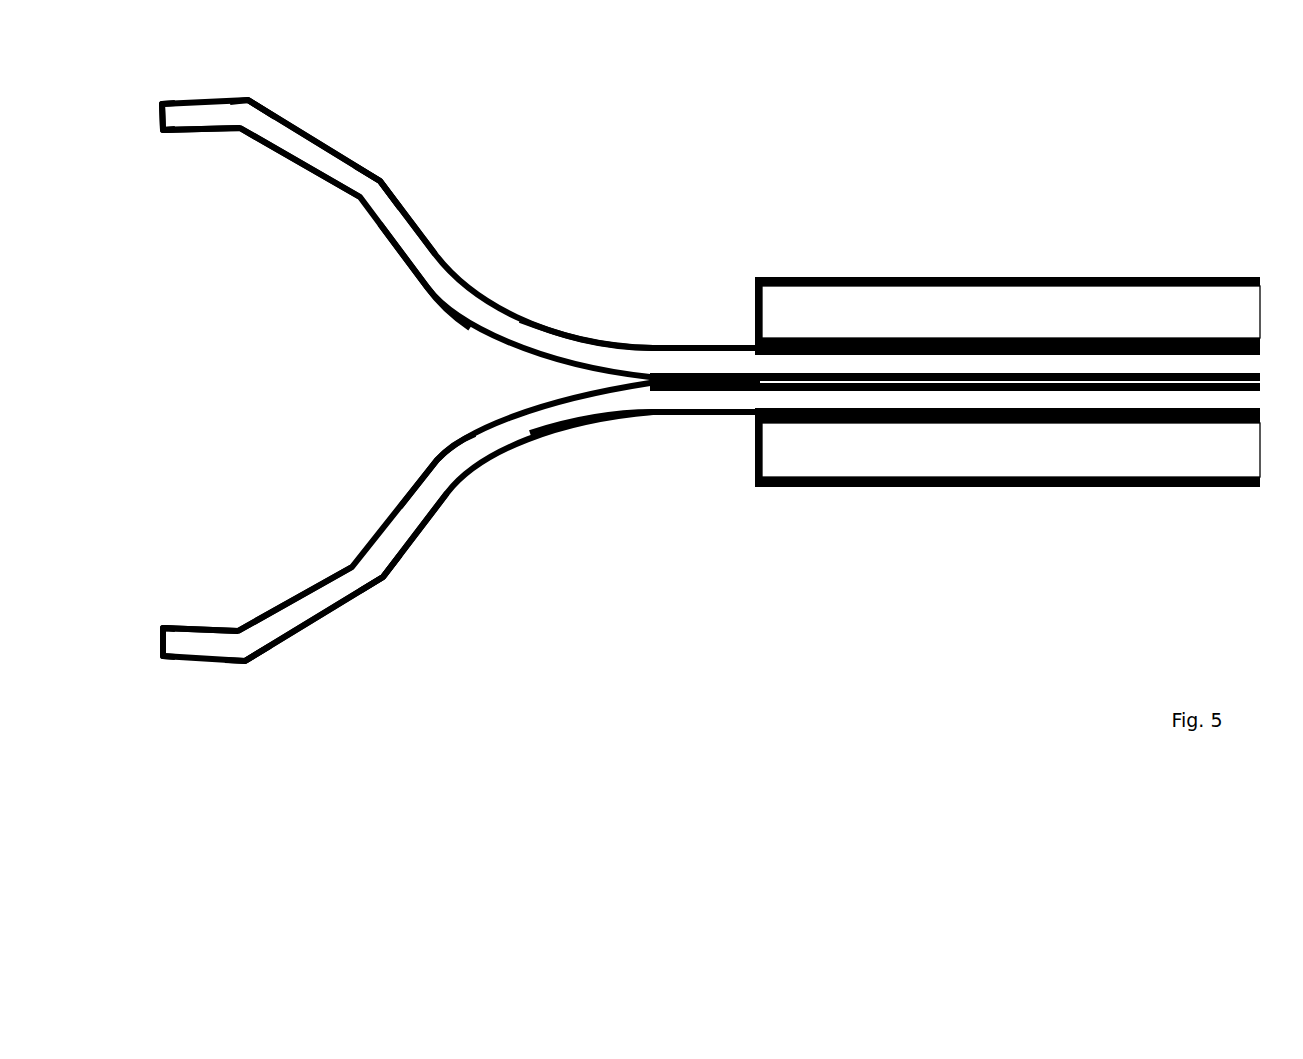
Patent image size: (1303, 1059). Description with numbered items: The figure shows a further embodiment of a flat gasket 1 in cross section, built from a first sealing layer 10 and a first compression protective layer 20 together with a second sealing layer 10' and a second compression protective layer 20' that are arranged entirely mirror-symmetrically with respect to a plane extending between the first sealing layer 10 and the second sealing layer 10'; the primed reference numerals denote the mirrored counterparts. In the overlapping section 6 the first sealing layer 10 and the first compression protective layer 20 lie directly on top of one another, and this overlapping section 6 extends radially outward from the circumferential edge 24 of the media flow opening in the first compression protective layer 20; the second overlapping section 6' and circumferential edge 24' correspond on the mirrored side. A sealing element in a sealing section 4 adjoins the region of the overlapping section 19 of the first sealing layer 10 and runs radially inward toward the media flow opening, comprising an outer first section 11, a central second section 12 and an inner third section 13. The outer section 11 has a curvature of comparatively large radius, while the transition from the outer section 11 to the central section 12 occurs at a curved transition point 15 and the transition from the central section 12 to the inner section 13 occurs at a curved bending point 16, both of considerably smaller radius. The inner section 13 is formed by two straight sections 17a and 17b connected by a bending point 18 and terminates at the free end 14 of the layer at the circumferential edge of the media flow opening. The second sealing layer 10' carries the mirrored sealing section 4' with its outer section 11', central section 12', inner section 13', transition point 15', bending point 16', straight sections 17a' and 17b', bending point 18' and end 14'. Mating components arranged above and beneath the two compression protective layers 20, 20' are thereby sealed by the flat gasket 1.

The flat gasket 1 is at (1190, 234).
The sealing section 4 is at (461, 443).
The sealing section 4' is at (461, 522).
The overlapping section 6 is at (1007, 401).
The overlapping section 6' is at (1007, 480).
The first sealing layer 10 is at (955, 365).
The second sealing layer 10' is at (955, 395).
The outer first section 11 is at (638, 304).
The outer first section 11' is at (643, 452).
The central second section 12 is at (427, 213).
The central second section 12' is at (439, 535).
The inner third section 13 is at (314, 116).
The inner third section 13' is at (314, 646).
The arm tip 14 is at (157, 161).
The arm tip 14' is at (159, 601).
The curved transition point 15 is at (425, 288).
The curved transition point 15' is at (437, 455).
The curved bending point 16 is at (389, 164).
The curved bending point 16' is at (401, 602).
The straight section 17a is at (300, 182).
The straight section 17a' is at (295, 580).
The straight section 17b is at (201, 167).
The straight section 17b' is at (200, 606).
The bending point 18 is at (256, 76).
The bending point 18' is at (248, 689).
The region of the overlapping section 19 is at (1070, 363).
The first compression protective layer 20 is at (1011, 312).
The second compression protective layer 20' is at (1011, 450).
The circumferential edge 24 is at (721, 290).
The circumferential edge 24' is at (732, 459).